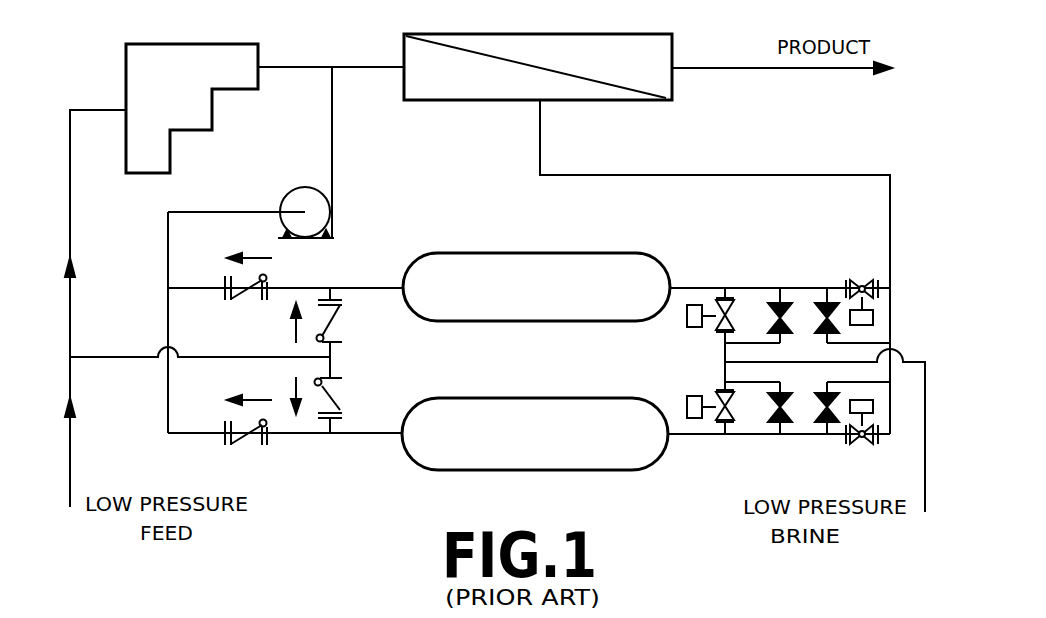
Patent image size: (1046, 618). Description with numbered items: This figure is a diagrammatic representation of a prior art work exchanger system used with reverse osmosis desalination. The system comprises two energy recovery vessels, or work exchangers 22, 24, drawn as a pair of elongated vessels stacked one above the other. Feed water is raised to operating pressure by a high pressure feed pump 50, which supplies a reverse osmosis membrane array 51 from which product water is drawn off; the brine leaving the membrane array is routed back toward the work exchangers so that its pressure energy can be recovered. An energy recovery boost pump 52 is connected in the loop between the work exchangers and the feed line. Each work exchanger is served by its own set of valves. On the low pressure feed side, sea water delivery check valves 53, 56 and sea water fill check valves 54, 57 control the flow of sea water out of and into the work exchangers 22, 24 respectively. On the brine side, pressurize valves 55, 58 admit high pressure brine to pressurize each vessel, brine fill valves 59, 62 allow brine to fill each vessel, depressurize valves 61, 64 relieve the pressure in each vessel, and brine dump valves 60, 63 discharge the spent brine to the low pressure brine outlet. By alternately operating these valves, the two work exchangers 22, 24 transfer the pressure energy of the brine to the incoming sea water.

The high pressure feed pump 50 is at (155, 44).
The reverse osmosis membrane array 51 is at (437, 34).
The energy recovery boost pump 52 is at (287, 190).
The energy recovery vessel 22 is at (425, 253).
The energy recovery vessel 24 is at (413, 468).
The sea water delivery check valve 53 is at (232, 300).
The sea water fill check valve 54 is at (340, 312).
The pressurize valve 55 is at (823, 300).
The sea water delivery check valve 56 is at (244, 445).
The sea water fill check valve 57 is at (341, 406).
The pressurize valve 58 is at (818, 422).
The brine fill valve 59 is at (862, 280).
The brine dump valve 60 is at (720, 298).
The depressurize valve 61 is at (778, 300).
The brine fill valve 62 is at (857, 444).
The brine dump valve 63 is at (720, 390).
The depressurize valve 64 is at (770, 422).